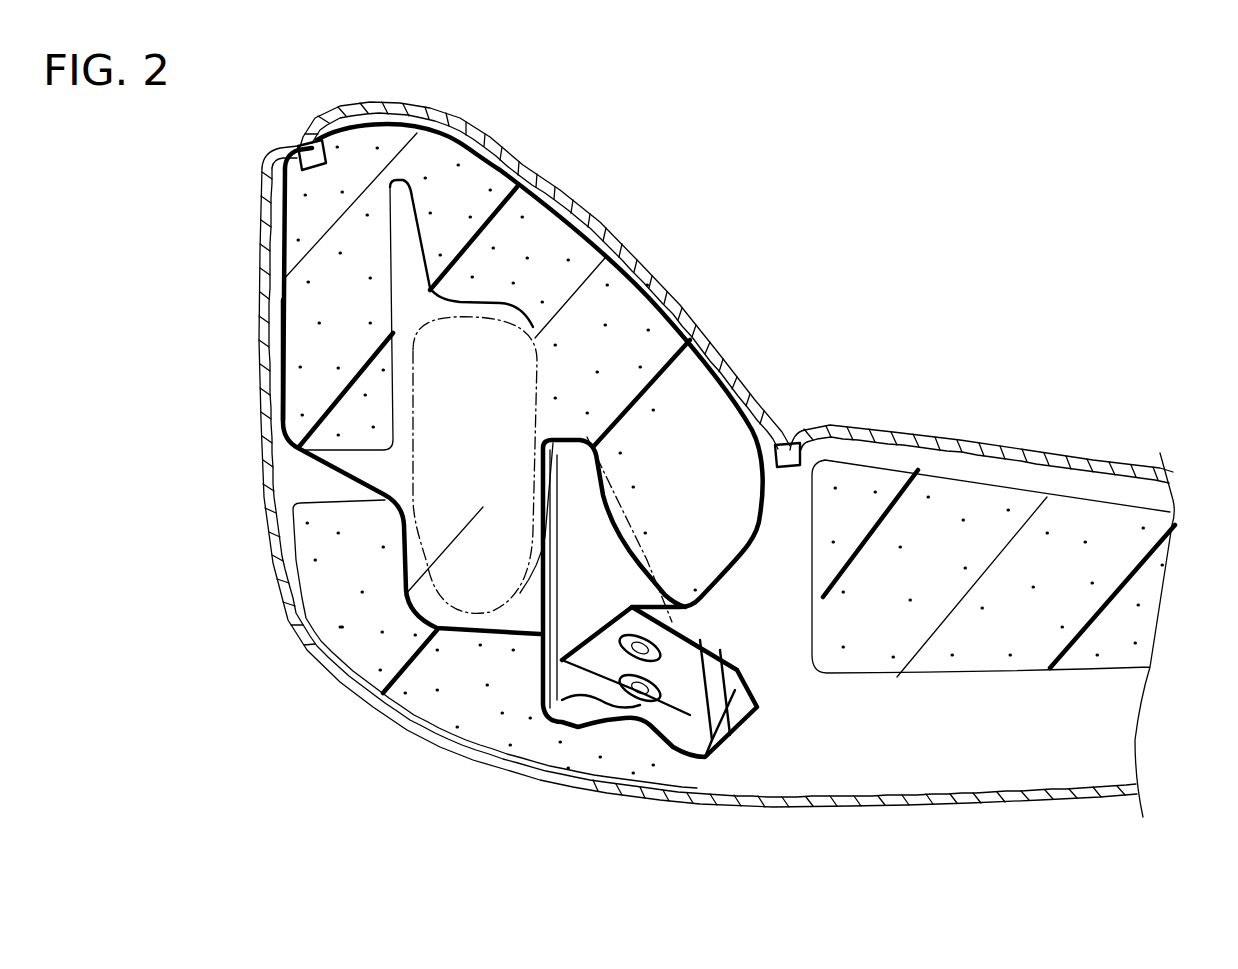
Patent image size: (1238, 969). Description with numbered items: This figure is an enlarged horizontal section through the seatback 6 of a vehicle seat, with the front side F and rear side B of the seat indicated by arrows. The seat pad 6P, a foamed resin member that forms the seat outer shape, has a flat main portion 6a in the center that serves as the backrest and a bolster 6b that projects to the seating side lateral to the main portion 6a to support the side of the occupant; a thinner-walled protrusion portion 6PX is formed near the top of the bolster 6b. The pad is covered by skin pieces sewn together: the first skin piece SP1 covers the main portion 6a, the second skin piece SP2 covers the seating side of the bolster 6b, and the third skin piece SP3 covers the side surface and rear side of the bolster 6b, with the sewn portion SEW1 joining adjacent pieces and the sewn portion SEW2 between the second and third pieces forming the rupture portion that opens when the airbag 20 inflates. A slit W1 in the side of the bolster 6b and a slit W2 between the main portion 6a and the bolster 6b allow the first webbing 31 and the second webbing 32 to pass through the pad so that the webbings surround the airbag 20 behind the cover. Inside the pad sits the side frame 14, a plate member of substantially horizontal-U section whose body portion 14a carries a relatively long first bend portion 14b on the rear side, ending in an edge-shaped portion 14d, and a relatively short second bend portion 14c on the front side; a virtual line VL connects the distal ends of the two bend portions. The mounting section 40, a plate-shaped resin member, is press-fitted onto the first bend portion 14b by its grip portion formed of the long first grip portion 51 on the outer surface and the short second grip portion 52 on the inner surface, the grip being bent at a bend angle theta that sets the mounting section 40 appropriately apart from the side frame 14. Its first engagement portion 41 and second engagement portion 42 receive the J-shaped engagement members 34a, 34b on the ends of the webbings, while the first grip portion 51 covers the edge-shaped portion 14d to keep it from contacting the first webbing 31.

The seatback 6 is at (1175, 320).
The main portion 6a is at (795, 229).
The bolster 6b is at (795, 455).
The seat pad 6P is at (1095, 520).
The protrusion portion 6PX is at (397, 173).
The second skin piece SP2 is at (588, 214).
The first skin piece SP1 is at (983, 445).
The third skin piece SP3 is at (278, 590).
The sewn portion SEW1 is at (796, 443).
The sewn portion SEW2 is at (300, 150).
The first webbing 31 is at (275, 370).
The second webbing 32 is at (645, 298).
The airbag 20 is at (413, 467).
The slit W1 is at (309, 489).
The slit W2 is at (780, 514).
The virtual line VL is at (632, 505).
The engagement member 34a is at (622, 655).
The engagement member 34b is at (580, 655).
The mounting section 40 is at (740, 693).
The first engagement portion 41 is at (670, 640).
The second grip portion 52 is at (727, 697).
The second engagement portion 42 is at (650, 695).
The first grip portion 51 is at (697, 757).
The side frame 14 is at (355, 771).
The body portion 14a is at (578, 592).
The first bend portion 14b is at (560, 705).
The second bend portion 14c is at (540, 572).
The edge-shaped portion 14d is at (753, 713).
The front side F is at (1055, 100).
The rear side B is at (1050, 813).
The bend angle theta is at (686, 723).